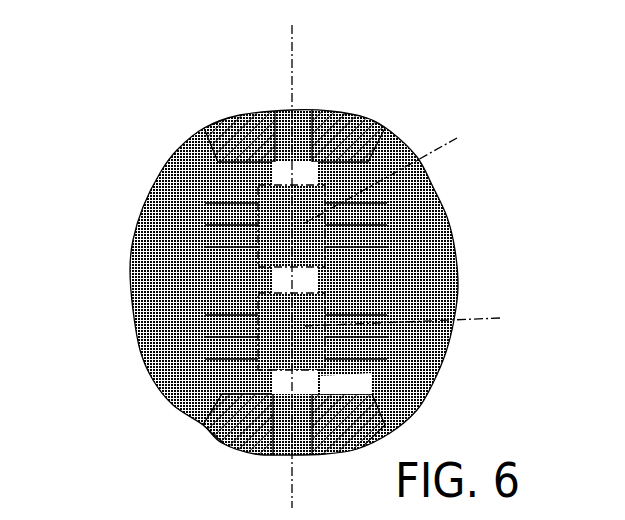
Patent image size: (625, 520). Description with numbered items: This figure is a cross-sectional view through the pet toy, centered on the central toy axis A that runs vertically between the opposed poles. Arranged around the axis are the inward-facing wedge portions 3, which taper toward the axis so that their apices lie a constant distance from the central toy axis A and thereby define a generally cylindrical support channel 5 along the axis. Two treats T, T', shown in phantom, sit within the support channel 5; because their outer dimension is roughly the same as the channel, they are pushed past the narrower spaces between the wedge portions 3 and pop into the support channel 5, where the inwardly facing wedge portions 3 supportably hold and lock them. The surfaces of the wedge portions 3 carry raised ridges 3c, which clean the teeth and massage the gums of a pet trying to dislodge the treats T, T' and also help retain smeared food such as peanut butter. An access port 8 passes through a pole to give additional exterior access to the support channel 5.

The access port 8 is at (285, 108).
The central toy axis A is at (295, 68).
The support channel 5 is at (302, 280).
The treat T is at (396, 168).
The treat T' is at (418, 311).
The wedge portion 3 is at (243, 260).
The raised ridges 3c is at (242, 335).